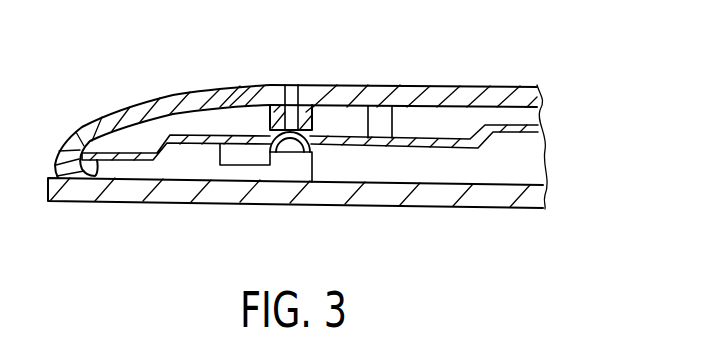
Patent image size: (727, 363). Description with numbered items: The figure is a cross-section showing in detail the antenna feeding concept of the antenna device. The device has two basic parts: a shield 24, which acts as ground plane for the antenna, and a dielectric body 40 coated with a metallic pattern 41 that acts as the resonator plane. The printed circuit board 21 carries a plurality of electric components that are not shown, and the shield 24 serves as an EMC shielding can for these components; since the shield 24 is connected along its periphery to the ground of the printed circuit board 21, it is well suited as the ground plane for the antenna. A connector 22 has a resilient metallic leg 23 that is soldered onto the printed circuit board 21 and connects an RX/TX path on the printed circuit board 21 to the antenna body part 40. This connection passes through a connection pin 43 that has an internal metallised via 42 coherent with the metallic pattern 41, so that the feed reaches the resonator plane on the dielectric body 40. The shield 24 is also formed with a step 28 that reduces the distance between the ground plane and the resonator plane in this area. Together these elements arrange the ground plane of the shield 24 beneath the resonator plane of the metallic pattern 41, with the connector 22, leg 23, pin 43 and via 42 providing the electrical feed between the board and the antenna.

The printed circuit board 21 is at (145, 202).
The connector 22 is at (283, 170).
The resilient metallic leg 23 is at (313, 150).
The shield 24 is at (437, 143).
The step 28 is at (525, 135).
The dielectric body 40 is at (148, 92).
The metallic pattern 41 is at (415, 86).
The internal metallised via 42 is at (290, 93).
The connection pin 43 is at (268, 127).